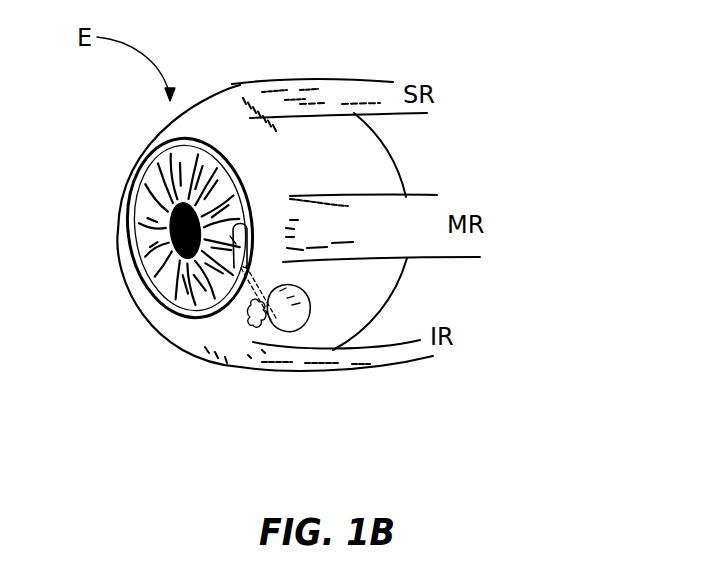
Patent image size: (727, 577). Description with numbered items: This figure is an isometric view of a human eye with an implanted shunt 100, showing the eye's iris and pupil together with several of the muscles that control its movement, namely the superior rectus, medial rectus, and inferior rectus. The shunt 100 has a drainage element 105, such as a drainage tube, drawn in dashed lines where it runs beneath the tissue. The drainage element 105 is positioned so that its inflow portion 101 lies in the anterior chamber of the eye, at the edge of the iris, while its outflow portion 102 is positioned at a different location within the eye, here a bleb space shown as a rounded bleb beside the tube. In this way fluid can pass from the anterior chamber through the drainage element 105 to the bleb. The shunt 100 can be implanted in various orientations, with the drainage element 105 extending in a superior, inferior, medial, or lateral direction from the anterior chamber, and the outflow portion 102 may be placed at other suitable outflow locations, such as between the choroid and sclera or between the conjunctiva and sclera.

The shunt 100 is at (262, 229).
The inflow portion 101 is at (228, 240).
The outflow portion 102 is at (262, 320).
The drainage element 105 is at (250, 283).
The bleb space bleb is at (287, 303).